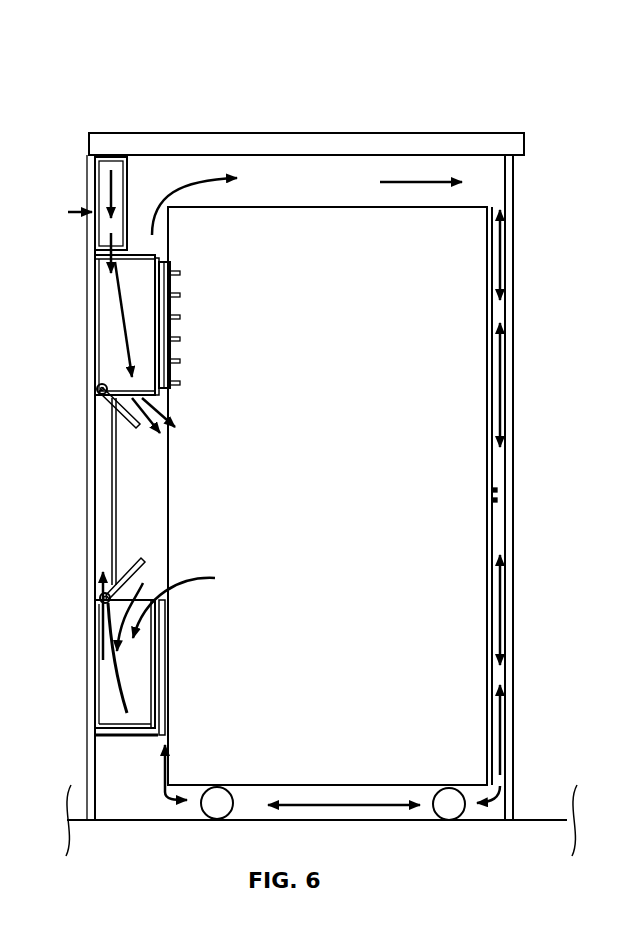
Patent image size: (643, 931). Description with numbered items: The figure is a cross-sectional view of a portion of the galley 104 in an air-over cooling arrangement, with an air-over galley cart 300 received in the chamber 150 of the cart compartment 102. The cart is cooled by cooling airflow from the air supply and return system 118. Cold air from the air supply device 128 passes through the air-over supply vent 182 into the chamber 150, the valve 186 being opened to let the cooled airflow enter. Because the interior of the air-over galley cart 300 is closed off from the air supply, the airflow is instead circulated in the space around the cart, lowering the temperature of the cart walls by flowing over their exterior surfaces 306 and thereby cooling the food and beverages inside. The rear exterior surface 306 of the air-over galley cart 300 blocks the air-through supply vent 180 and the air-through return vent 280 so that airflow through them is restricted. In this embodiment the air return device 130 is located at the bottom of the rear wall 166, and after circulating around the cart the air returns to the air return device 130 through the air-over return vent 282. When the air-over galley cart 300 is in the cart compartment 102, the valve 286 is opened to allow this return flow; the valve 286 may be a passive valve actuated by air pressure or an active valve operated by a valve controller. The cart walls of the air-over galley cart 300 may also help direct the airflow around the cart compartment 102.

The galley 104 is at (498, 105).
The cart compartment 102 is at (333, 182).
The chamber 150 is at (475, 185).
The air-over galley cart 300 is at (490, 533).
The rear wall 166 is at (92, 630).
The air supply and return system 118 is at (102, 188).
The air supply device 128 is at (110, 352).
The air-over supply vent 182 is at (140, 388).
The air-through supply vent 180 is at (168, 287).
The valve 186 is at (130, 425).
The valve 286 is at (131, 565).
The air-over return vent 282 is at (152, 577).
The air return device 130 is at (110, 693).
The air-through return vent 280 is at (165, 648).
The exterior surface 306 is at (168, 478).